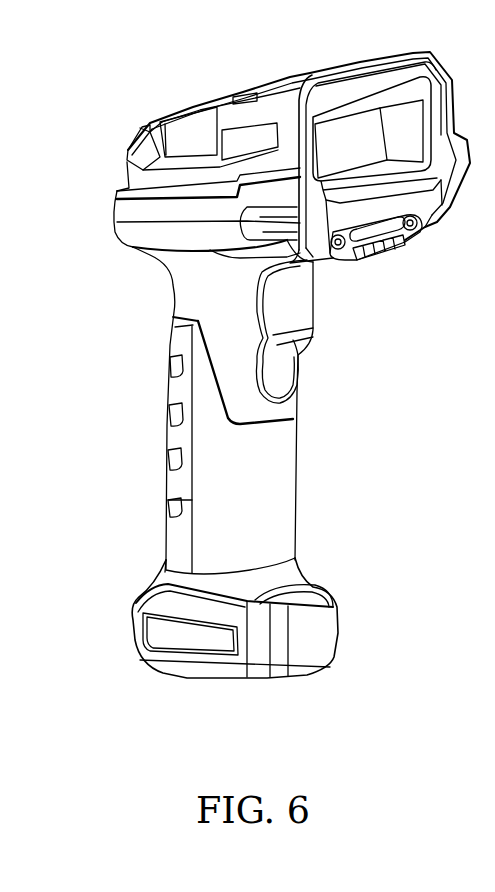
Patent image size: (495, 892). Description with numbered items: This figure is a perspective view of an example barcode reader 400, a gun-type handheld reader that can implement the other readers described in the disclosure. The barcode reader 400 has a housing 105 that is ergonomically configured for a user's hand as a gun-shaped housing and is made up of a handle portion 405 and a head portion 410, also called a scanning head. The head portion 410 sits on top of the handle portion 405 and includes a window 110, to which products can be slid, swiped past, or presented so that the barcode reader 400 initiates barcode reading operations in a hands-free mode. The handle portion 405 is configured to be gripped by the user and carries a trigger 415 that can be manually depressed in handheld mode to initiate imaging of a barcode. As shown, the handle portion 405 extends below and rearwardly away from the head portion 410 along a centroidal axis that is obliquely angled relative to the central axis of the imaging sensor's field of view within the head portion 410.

The barcode reader 400 is at (240, 347).
The window 110 is at (346, 148).
The head portion 410 is at (167, 182).
The housing 105 is at (143, 234).
The trigger 415 is at (293, 303).
The handle portion 405 is at (280, 500).